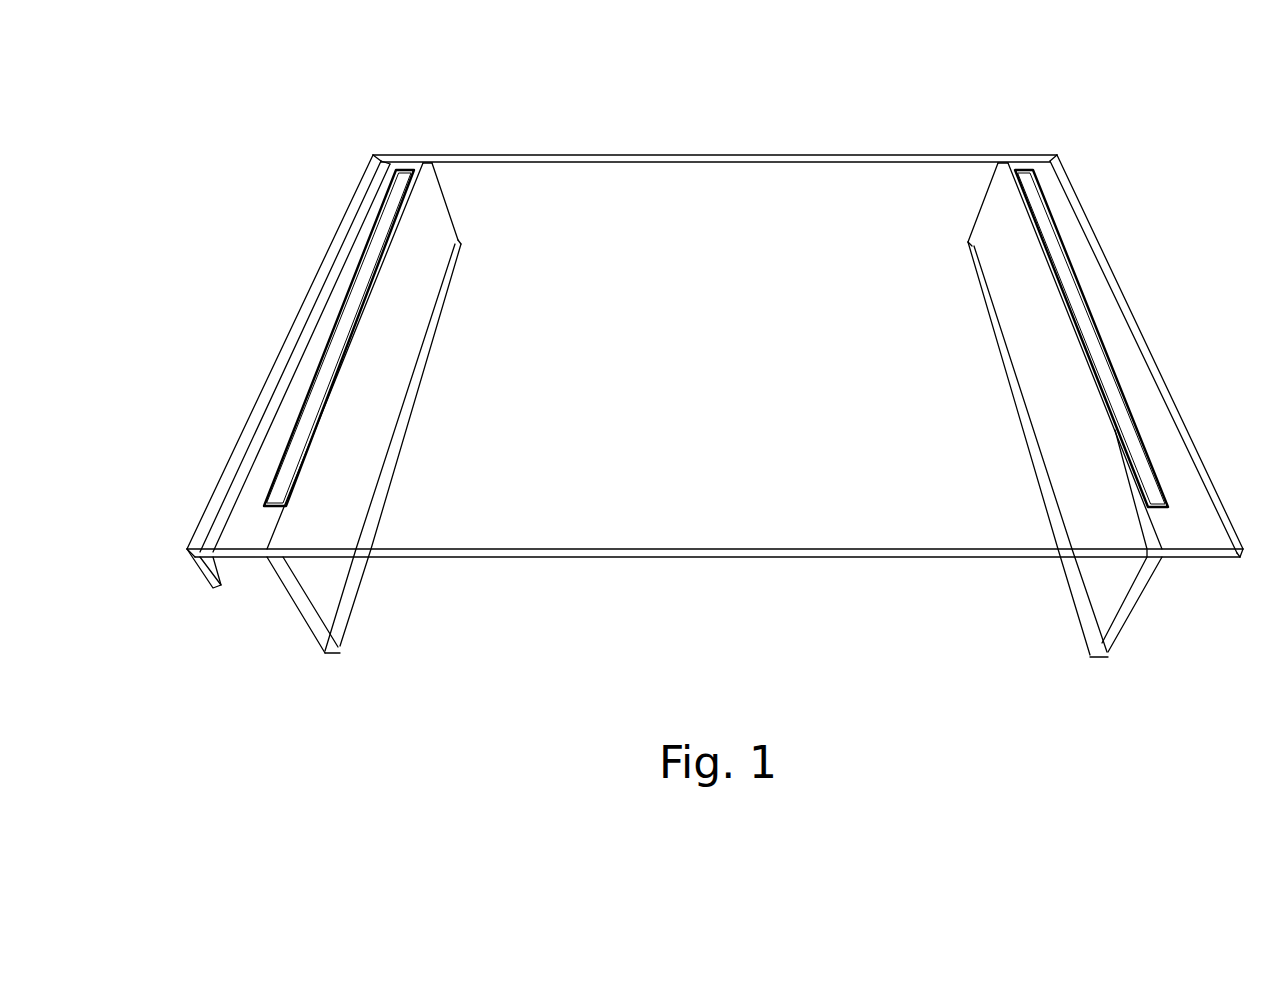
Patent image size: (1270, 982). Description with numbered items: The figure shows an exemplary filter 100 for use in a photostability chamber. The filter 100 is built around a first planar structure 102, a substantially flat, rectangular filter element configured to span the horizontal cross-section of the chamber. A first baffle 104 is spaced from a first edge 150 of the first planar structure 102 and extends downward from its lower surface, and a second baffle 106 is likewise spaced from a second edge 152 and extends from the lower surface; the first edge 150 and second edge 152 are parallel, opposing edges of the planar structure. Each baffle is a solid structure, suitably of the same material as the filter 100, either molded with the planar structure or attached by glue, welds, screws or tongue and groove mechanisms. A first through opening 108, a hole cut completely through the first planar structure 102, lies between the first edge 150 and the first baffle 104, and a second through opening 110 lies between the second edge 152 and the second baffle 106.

The filter 100 is at (348, 170).
The first planar structure 102 is at (503, 183).
The first baffle 104 is at (330, 603).
The second baffle 106 is at (1110, 607).
The first through opening 108 is at (355, 303).
The second through opening 110 is at (1112, 385).
The first edge 150 is at (288, 338).
The second edge 152 is at (1112, 265).